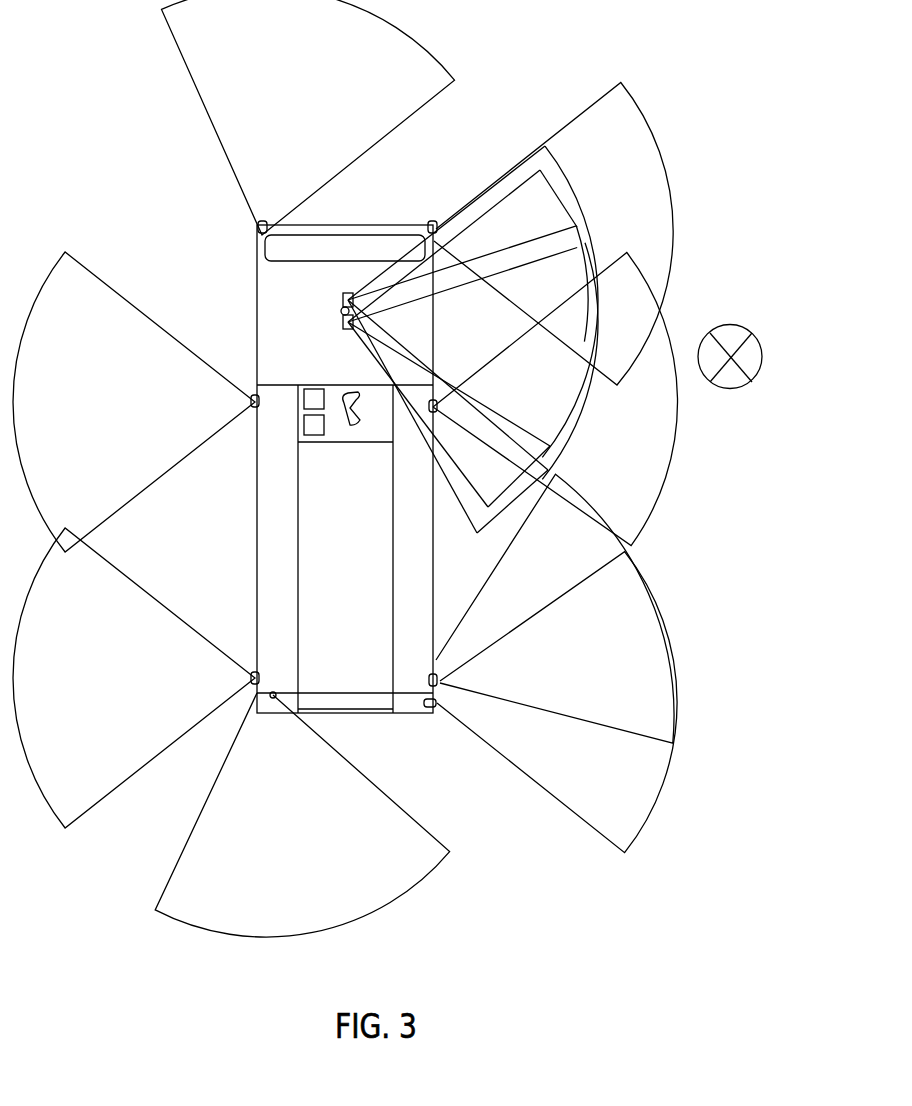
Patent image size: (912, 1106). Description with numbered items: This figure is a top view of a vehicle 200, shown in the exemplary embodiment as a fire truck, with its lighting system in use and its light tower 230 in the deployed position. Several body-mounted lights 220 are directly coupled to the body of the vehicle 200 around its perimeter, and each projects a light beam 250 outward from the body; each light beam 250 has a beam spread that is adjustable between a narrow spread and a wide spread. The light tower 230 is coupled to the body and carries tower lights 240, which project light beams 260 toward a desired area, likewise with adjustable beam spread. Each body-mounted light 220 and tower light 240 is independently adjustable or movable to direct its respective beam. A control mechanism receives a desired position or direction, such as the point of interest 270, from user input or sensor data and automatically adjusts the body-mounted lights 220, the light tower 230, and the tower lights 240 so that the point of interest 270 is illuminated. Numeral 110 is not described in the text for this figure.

The sensor system 110 is at (658, 822).
The vehicle 200 is at (434, 556).
The body-mounted light 220 is at (258, 225).
The light tower 230 is at (322, 314).
The tower light 240 is at (343, 299).
The light beam 250 is at (329, 110).
The light beam 260 is at (486, 337).
The point of interest 270 is at (731, 391).